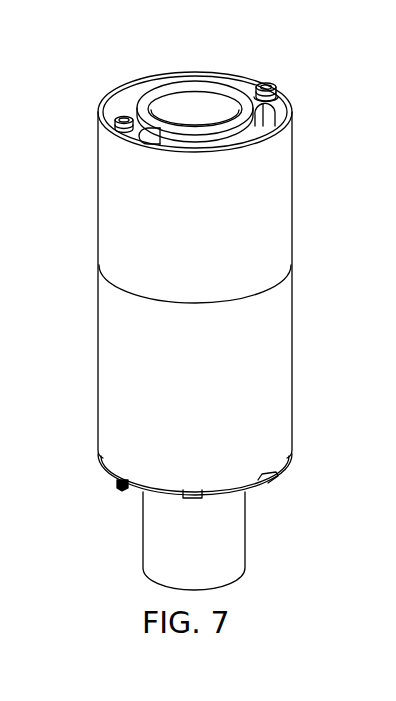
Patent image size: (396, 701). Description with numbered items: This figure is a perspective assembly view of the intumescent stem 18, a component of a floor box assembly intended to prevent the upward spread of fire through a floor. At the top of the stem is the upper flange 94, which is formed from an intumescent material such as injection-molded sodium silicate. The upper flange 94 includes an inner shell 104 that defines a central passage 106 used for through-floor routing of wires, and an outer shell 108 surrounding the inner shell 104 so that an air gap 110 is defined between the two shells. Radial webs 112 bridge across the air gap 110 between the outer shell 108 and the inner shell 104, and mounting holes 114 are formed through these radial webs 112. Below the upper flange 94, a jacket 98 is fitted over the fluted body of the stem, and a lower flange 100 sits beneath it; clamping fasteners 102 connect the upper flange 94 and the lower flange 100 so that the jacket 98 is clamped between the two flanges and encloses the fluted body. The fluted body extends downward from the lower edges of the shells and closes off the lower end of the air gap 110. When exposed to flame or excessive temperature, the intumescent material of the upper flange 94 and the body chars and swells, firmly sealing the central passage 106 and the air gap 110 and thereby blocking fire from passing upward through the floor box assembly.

The intumescent stem 18 is at (79, 86).
The upper flange 94 is at (293, 224).
The jacket 98 is at (128, 380).
The lower flange 100 is at (230, 534).
The clamping fasteners 102 is at (115, 125).
The inner shell 104 is at (215, 129).
The central passage 106 is at (197, 103).
The outer shell 108 is at (130, 221).
The air gap 110 is at (131, 99).
The radial webs 112 is at (280, 100).
The mounting holes 114 is at (278, 94).